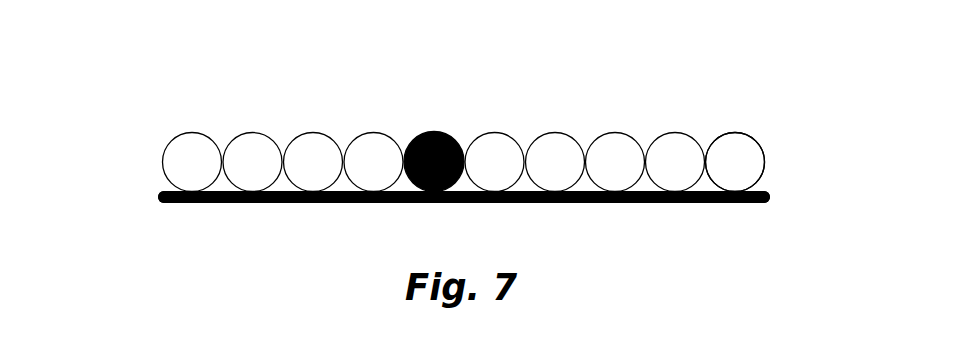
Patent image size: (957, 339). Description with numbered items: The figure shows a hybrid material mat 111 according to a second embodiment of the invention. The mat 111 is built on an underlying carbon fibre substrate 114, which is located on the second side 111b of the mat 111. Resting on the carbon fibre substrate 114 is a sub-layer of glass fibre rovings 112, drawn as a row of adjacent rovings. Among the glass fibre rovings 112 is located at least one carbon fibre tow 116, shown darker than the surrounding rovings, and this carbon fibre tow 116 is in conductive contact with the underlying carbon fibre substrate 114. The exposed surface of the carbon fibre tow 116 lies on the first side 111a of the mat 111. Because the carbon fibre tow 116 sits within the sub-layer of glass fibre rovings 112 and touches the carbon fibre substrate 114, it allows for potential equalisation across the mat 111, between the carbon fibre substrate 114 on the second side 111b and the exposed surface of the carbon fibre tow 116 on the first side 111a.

The hybrid material mat 111 is at (210, 78).
The first side of the mat 111a is at (730, 130).
The second side of the mat 111b is at (723, 203).
The glass fibre rovings 112 is at (673, 137).
The carbon fibre substrate 114 is at (207, 203).
The carbon fibre tow 116 is at (443, 134).